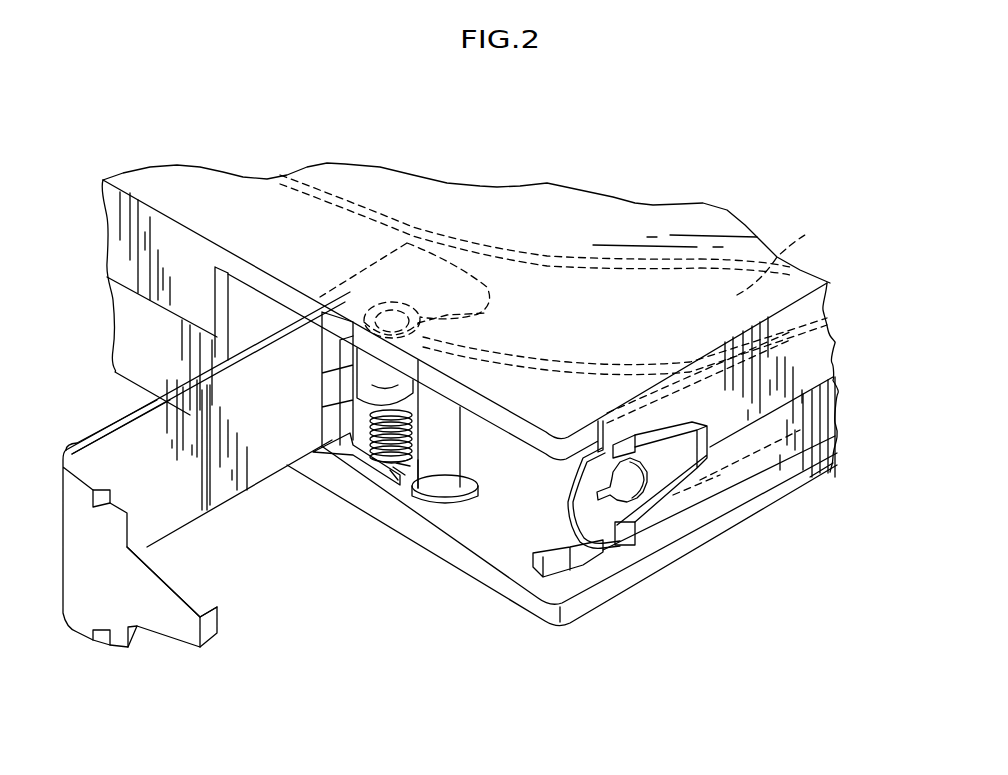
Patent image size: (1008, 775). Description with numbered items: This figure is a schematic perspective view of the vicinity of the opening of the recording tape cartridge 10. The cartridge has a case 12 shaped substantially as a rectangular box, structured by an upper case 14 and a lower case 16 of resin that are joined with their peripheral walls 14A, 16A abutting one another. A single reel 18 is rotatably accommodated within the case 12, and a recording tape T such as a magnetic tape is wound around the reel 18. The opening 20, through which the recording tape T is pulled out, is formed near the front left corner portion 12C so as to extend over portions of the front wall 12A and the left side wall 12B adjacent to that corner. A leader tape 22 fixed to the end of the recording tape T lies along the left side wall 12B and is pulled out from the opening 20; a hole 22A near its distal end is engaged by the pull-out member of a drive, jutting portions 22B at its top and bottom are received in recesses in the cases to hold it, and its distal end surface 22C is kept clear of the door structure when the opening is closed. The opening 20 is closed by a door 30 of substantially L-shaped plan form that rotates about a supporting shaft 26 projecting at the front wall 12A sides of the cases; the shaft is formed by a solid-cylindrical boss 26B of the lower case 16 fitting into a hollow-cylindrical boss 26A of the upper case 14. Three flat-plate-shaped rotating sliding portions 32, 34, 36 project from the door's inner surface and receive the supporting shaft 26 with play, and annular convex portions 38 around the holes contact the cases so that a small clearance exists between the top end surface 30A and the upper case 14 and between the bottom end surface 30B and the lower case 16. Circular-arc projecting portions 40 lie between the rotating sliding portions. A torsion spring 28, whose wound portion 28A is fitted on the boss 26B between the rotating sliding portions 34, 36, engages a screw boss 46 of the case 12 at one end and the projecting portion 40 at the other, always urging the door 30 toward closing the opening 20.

The recording tape cartridge 10 is at (608, 127).
The case 12 is at (653, 205).
The front wall 12A is at (190, 300).
The left side wall 12B is at (727, 423).
The front left corner portion 12C is at (567, 443).
The upper case 14 is at (823, 347).
The peripheral wall 14A is at (118, 247).
The lower case 16 is at (822, 436).
The peripheral wall 16A is at (120, 332).
The reel 18 is at (333, 190).
The recording tape T is at (779, 258).
The opening 20 is at (513, 557).
The leader tape 22 is at (625, 548).
The hole 22A is at (657, 485).
The jutting portions 22B is at (643, 403).
The distal end surface 22C is at (572, 527).
The supporting shaft 26 is at (283, 532).
The boss 26A is at (353, 403).
The boss 26B is at (367, 480).
The torsion spring 28 is at (405, 455).
The wound portion 28A is at (393, 467).
The door 30 is at (80, 560).
The top end surface 30A is at (260, 340).
The bottom end surface 30B is at (187, 533).
The rotating sliding portion 32 is at (420, 340).
The rotating sliding portion 34 is at (413, 480).
The rotating sliding portion 36 is at (402, 430).
The annular convex portions 38 is at (422, 300).
The projecting portions 40 is at (325, 395).
The screw boss 46 is at (453, 420).